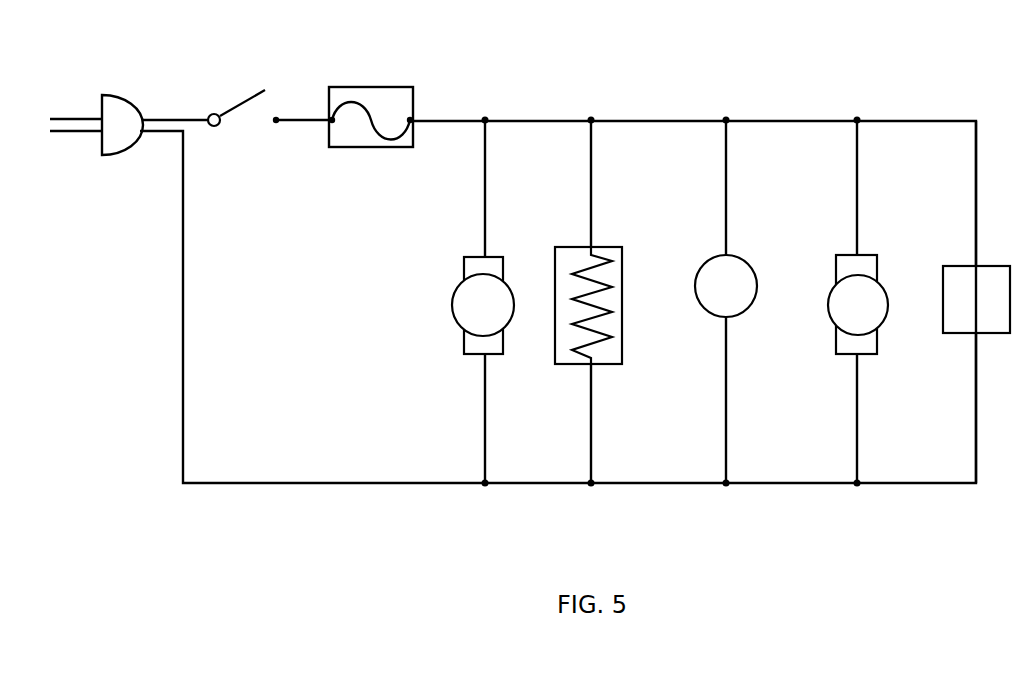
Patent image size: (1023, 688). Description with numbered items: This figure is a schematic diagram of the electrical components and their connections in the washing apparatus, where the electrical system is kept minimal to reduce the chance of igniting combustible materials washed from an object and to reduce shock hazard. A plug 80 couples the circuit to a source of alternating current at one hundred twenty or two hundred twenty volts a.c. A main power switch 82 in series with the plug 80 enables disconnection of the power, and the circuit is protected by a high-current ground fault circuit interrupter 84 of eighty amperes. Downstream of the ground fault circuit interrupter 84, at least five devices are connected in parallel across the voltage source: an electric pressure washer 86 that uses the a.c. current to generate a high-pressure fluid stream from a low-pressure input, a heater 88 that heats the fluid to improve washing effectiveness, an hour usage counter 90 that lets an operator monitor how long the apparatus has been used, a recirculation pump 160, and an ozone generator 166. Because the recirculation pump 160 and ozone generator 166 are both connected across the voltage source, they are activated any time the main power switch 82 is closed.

The plug 80 is at (118, 97).
The main power switch 82 is at (248, 124).
The ground fault circuit interrupter 84 is at (398, 92).
The electric pressure washer 86 is at (464, 272).
The heater 88 is at (555, 258).
The hour usage counter 90 is at (695, 286).
The recirculation pump 160 is at (828, 305).
The ozone generator 166 is at (943, 288).